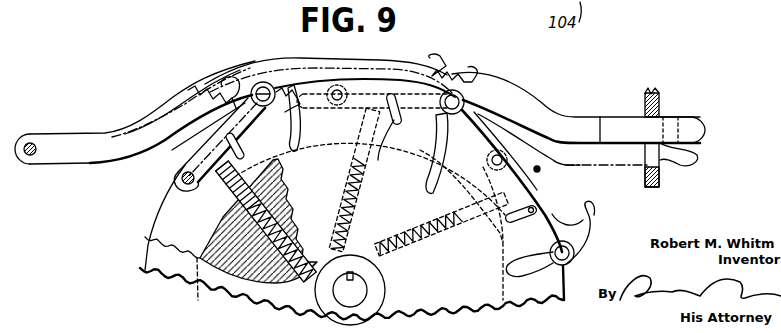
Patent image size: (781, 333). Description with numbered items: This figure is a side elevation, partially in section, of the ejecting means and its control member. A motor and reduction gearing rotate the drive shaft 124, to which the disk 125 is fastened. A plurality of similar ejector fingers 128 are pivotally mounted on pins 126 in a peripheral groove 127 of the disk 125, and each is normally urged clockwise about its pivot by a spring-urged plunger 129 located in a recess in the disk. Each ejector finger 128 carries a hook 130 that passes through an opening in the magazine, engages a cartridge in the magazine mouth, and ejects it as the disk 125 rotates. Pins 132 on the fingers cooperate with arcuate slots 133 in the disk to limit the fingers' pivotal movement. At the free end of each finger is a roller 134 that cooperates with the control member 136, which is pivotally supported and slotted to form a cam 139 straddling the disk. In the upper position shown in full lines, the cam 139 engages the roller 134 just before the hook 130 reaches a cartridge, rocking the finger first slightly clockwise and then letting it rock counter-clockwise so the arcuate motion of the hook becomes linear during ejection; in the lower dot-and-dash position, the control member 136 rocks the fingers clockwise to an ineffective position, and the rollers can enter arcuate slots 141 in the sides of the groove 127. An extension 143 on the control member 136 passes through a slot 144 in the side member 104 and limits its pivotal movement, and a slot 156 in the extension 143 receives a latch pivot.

The side member 104 is at (645, 100).
The drive shaft 124 is at (366, 292).
The disk 125 is at (508, 303).
The pins 126 is at (181, 177).
The peripheral groove 127 is at (158, 214).
The ejector fingers 128 is at (190, 142).
The spring-urged plungers 129 is at (226, 190).
The hook 130 is at (230, 78).
The pins 132 is at (403, 98).
The arcuate slots 133 is at (378, 160).
The roller 134 is at (262, 82).
The control member 136 is at (515, 90).
The cam 139 is at (554, 176).
The arcuate slots 141 is at (299, 146).
The extension 143 is at (697, 122).
The slot 144 is at (666, 164).
The slot 156 is at (666, 117).